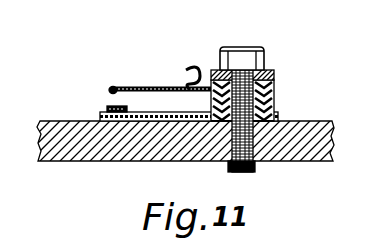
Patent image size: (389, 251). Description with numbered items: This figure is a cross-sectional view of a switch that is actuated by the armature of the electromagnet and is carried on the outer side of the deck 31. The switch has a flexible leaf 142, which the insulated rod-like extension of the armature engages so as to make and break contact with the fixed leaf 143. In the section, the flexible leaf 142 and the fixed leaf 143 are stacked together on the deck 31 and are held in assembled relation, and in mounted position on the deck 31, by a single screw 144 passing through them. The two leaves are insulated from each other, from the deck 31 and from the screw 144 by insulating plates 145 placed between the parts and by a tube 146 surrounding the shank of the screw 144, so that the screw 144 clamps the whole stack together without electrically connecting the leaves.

The deck 31 is at (130, 138).
The flexible leaf 142 is at (143, 86).
The fixed leaf 143 is at (116, 108).
The screw 144 is at (257, 47).
The insulating plates 145 is at (273, 78).
The tube 146 is at (274, 99).